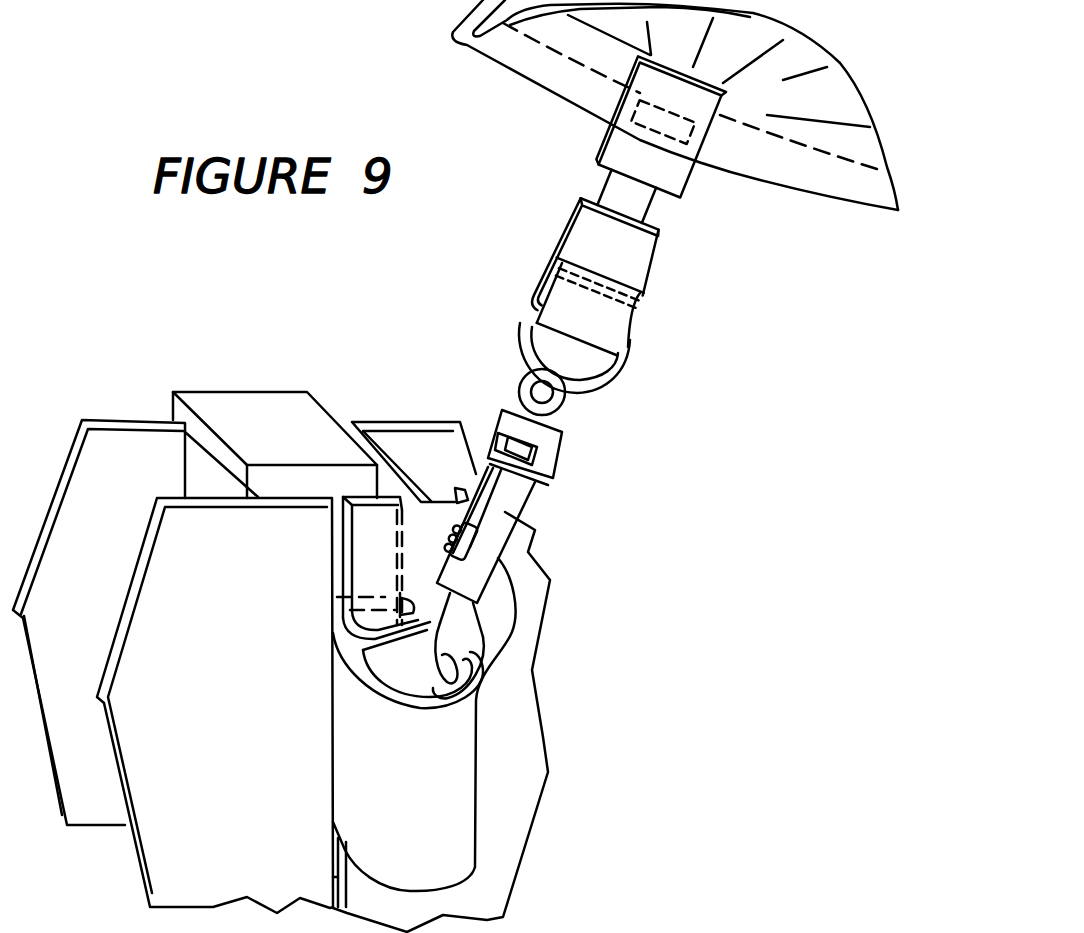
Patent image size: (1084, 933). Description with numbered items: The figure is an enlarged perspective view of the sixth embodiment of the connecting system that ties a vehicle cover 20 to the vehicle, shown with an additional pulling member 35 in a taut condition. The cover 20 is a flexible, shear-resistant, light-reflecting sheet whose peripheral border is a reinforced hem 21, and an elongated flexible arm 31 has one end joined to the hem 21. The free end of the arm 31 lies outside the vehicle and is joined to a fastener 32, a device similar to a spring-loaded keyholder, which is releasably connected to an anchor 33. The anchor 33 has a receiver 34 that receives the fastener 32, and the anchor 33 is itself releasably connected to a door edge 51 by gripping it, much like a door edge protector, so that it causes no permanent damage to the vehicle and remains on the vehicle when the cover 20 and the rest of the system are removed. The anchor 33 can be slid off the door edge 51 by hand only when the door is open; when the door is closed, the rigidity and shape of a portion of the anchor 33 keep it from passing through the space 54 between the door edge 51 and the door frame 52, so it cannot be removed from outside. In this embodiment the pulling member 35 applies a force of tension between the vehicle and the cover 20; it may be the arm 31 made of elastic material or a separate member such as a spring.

The cover 20 is at (760, 83).
The hem 21 is at (728, 152).
The arm 31 is at (621, 234).
The fastener 32 is at (507, 505).
The anchor 33 is at (418, 770).
The receiver 34 is at (442, 693).
The pulling member 35 is at (632, 202).
The door edge 51 is at (323, 522).
The door frame 52 is at (270, 418).
The space 54 is at (367, 542).